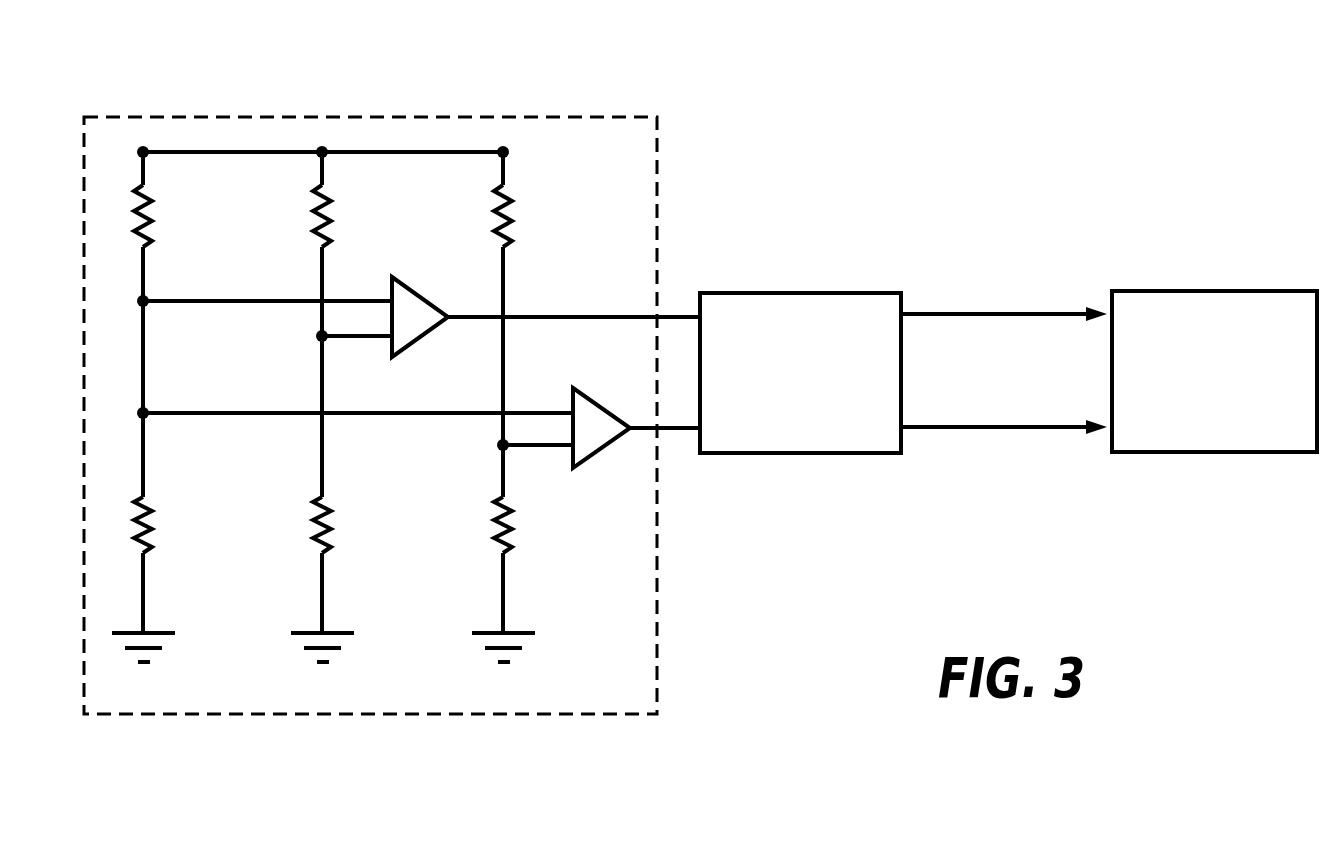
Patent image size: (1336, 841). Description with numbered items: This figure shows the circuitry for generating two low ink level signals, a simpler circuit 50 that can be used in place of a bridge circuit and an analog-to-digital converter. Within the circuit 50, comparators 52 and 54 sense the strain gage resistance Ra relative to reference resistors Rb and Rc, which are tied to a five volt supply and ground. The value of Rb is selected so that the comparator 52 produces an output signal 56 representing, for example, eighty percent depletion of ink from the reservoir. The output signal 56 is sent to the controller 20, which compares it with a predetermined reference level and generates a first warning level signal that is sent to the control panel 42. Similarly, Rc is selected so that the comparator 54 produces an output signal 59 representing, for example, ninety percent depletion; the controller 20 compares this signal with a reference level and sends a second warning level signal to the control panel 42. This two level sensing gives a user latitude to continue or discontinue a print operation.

The circuit 50 is at (370, 115).
The comparator 52 is at (428, 300).
The comparator 54 is at (600, 405).
The output signal 56 is at (607, 313).
The output signal 59 is at (642, 432).
The controller 20 is at (800, 292).
The control panel 42 is at (1215, 290).